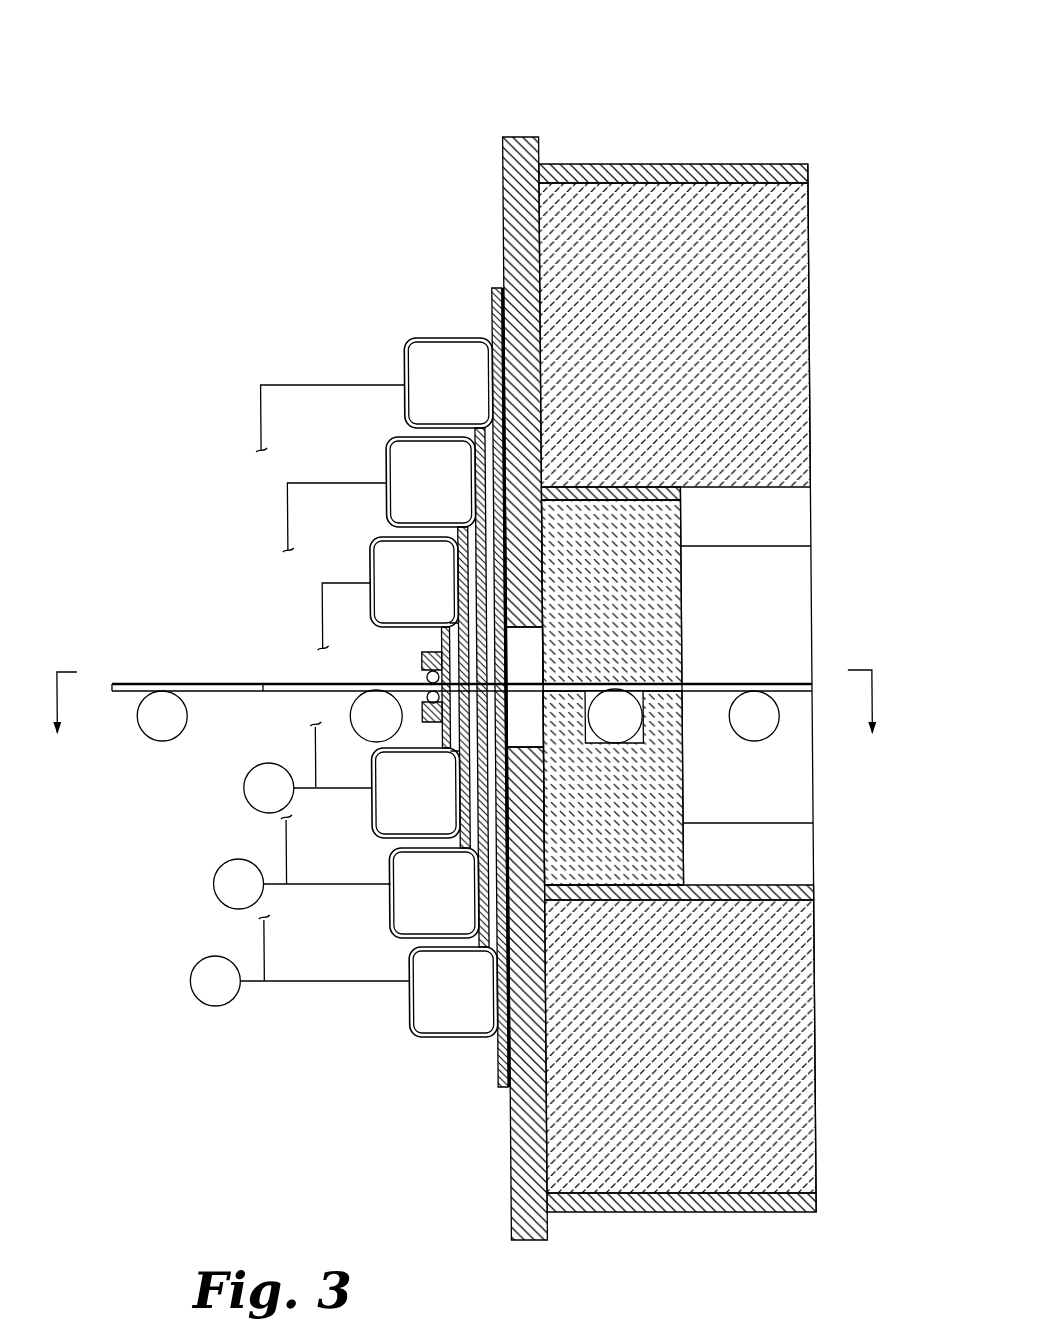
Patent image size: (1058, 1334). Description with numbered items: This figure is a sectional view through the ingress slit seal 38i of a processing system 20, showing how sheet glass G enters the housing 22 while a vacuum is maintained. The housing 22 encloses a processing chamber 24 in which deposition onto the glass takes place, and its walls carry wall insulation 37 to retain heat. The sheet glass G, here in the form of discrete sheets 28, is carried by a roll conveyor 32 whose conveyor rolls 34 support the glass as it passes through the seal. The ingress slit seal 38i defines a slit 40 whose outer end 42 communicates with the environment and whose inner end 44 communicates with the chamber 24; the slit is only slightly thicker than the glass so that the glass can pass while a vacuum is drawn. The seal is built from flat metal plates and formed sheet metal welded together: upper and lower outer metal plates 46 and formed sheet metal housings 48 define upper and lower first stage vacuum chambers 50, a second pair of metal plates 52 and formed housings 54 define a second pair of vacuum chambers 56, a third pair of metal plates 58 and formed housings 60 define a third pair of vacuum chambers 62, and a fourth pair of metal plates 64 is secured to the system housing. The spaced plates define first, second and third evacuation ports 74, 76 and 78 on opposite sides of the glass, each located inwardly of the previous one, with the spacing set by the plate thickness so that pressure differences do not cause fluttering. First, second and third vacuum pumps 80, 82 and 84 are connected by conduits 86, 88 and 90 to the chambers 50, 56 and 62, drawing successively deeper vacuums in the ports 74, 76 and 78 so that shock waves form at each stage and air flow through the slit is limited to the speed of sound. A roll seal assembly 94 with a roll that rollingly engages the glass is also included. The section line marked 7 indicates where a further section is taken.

The processing system 20 is at (665, 123).
The housing 22 is at (597, 163).
The processing chamber 24 is at (745, 547).
The discrete sheets 28 is at (285, 684).
The roll conveyor 32 is at (125, 713).
The conveyor rolls 34 is at (754, 742).
The wall insulation 37 is at (730, 260).
The ingress slit seal 38i is at (233, 342).
The slit 40 is at (422, 705).
The outer end 42 is at (426, 697).
The inner end 44 is at (505, 688).
The outer metal plates 46 is at (442, 630).
The formed sheet metal housings 48 is at (371, 563).
The first stage vacuum chambers 50 is at (399, 596).
The second pair of metal plates 52 is at (392, 527).
The second pair of formed sheet metal housings 54 is at (388, 462).
The second pair of vacuum chambers 56 is at (416, 496).
The third pair of metal plates 58 is at (407, 430).
The third pair of formed sheet metal housings 60 is at (405, 360).
The third pair of vacuum chambers 62 is at (433, 396).
The fourth pair of metal plates 64 is at (495, 292).
The first evacuation port 74 is at (508, 627).
The second evacuation port 76 is at (510, 655).
The third evacuation port 78 is at (510, 675).
The first vacuum pump 80 is at (243, 788).
The second vacuum pump 82 is at (212, 884).
The third vacuum pump 84 is at (188, 981).
The conduits 86 is at (323, 632).
The conduits 88 is at (289, 530).
The conduits 90 is at (263, 430).
The roll seal assembly 94 is at (418, 672).
The sheet glass G is at (147, 683).
The section line 7- 7 is at (464, 723).